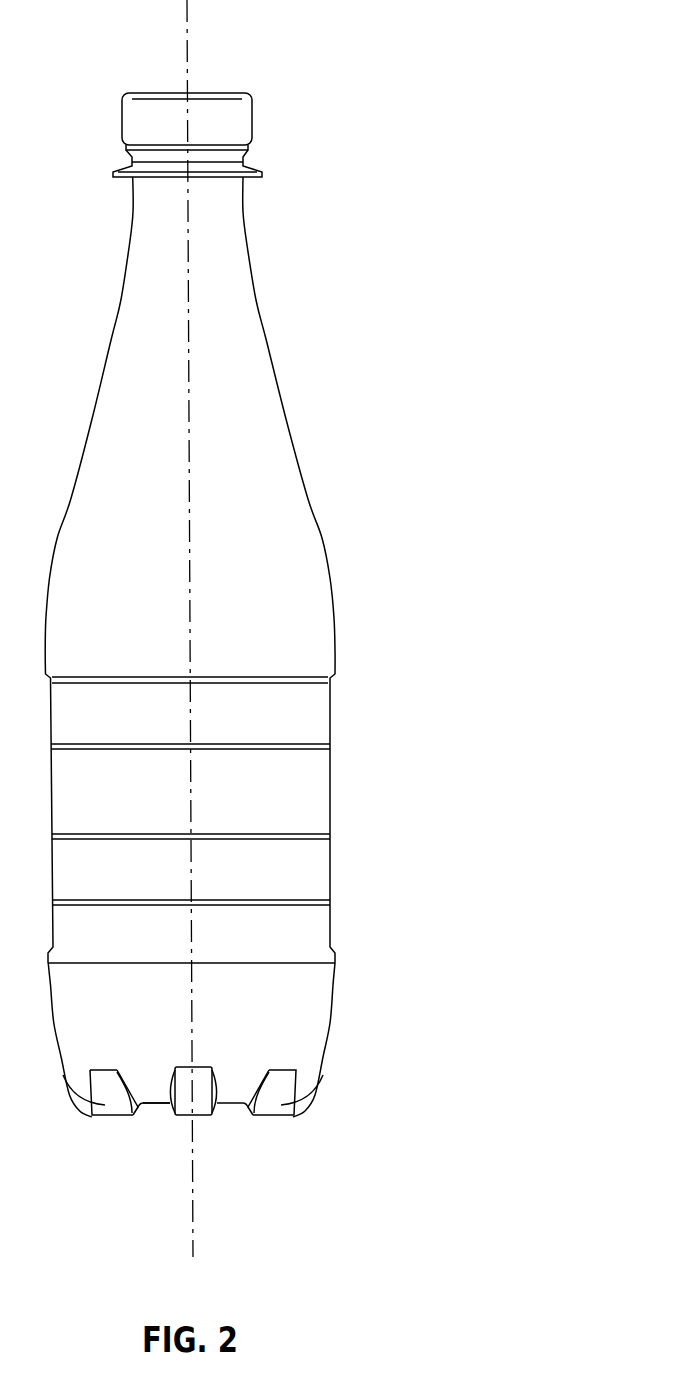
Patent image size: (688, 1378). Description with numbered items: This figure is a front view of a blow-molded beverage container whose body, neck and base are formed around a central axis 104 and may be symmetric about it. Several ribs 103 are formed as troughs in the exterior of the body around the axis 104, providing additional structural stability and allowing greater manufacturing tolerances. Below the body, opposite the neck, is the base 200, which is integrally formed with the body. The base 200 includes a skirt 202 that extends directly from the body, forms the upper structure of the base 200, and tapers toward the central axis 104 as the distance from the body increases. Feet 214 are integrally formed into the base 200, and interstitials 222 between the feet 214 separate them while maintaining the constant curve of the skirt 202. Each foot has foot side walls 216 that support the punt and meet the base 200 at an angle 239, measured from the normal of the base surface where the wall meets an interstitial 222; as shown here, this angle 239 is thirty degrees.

The central axis 104 is at (187, 27).
The ribs 103 is at (300, 747).
The base 200 is at (313, 993).
The skirt 202 is at (268, 1161).
The feet 214 is at (117, 1105).
The foot side walls 216 is at (135, 1112).
The interstitials 222 is at (161, 1095).
The angle 239 is at (221, 1100).